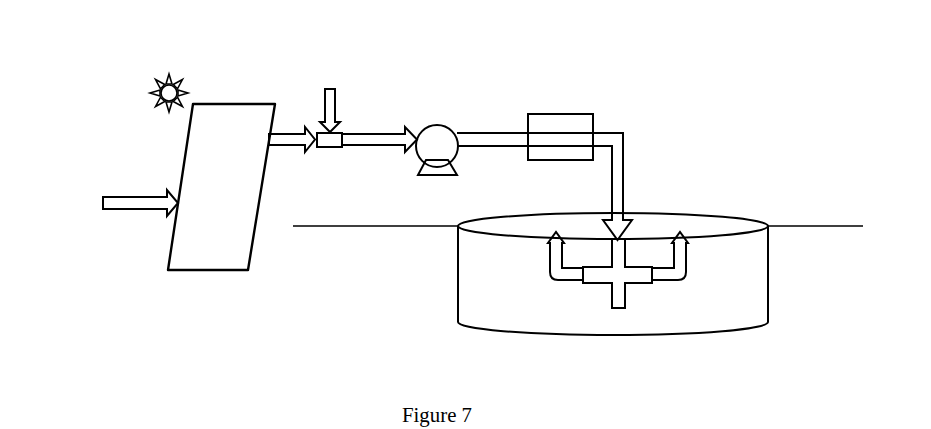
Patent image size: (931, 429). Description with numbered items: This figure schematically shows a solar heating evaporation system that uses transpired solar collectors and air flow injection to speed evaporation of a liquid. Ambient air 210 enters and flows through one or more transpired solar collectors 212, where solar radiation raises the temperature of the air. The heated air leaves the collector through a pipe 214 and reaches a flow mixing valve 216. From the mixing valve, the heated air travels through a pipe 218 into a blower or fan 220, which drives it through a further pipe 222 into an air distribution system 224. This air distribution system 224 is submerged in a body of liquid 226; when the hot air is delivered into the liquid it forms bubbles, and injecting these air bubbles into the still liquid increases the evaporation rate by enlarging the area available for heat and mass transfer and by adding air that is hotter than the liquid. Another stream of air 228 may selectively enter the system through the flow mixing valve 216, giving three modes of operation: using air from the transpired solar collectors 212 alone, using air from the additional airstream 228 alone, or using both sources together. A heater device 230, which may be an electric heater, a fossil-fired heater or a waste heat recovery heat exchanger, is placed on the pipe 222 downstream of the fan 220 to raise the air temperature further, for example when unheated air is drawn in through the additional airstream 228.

The ambient air 210 is at (139, 198).
The transpired solar collector 212 is at (222, 130).
The pipe 214 is at (285, 128).
The flow mixing valve 216 is at (328, 150).
The pipe 218 is at (375, 132).
The blower or fan 220 is at (427, 140).
The pipe 222 is at (485, 132).
The air distribution system 224 is at (617, 273).
The body of liquid 226 is at (738, 285).
The additional airstream 228 is at (328, 88).
The heater device 230 is at (555, 122).